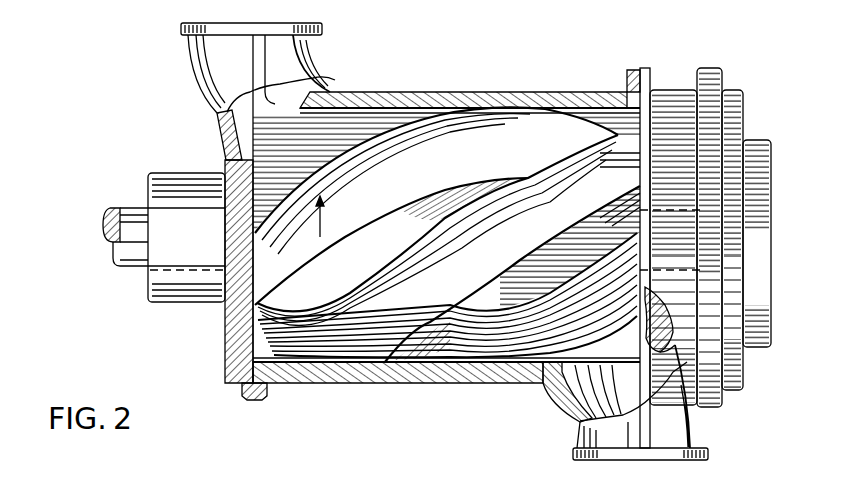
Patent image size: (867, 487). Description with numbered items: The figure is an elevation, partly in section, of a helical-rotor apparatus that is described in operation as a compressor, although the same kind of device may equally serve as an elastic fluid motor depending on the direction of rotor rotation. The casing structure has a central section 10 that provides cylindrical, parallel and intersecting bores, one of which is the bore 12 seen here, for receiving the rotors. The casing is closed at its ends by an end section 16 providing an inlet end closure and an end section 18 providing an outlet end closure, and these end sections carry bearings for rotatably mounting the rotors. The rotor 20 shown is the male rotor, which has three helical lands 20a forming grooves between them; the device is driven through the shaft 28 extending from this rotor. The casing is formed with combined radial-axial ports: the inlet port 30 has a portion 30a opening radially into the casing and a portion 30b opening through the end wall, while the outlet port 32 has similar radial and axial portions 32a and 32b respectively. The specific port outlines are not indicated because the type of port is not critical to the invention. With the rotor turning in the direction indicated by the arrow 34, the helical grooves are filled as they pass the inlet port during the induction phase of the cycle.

The central section 10 is at (487, 368).
The bore 12 is at (402, 367).
The end section 16 is at (658, 90).
The end section 18 is at (233, 362).
The rotor 20 is at (447, 234).
The helical lands 20a is at (526, 139).
The shaft 28 is at (147, 206).
The inlet port 30 is at (647, 373).
The radial portion of inlet port 30a is at (574, 398).
The axial portion of inlet port 30b is at (701, 432).
The outlet port 32 is at (288, 94).
The radial portion of outlet port 32a is at (330, 81).
The axial portion of outlet port 32b is at (240, 148).
The arrow 34 is at (309, 225).